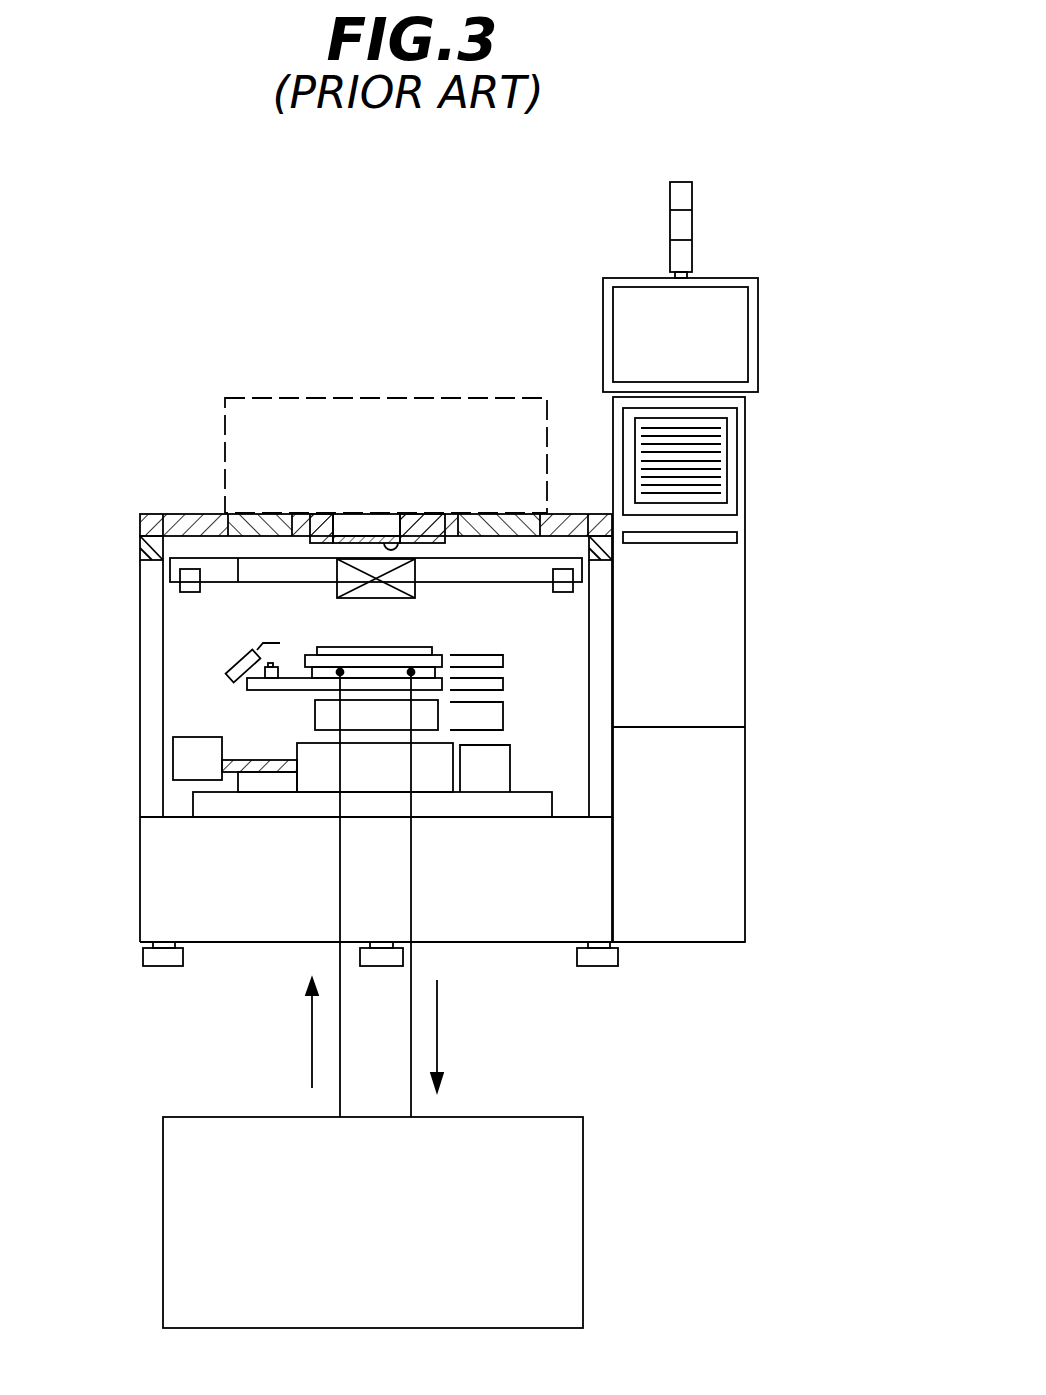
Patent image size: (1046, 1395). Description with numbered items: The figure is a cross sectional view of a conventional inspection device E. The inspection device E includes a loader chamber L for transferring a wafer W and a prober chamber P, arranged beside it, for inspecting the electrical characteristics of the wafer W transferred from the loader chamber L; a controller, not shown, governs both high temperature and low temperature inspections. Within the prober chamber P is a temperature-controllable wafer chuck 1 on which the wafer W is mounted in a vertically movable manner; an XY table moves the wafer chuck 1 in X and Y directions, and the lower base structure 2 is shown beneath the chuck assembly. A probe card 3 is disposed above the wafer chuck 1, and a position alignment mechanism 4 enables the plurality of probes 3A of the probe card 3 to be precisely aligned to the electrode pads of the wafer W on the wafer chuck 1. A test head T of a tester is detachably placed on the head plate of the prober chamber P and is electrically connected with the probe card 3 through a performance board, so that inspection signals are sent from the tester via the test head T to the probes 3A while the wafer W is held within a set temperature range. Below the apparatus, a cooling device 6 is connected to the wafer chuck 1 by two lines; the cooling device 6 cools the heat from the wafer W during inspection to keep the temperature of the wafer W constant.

The inspection device E is at (523, 265).
The test head T is at (254, 420).
The probe card 3 is at (343, 536).
The probes 3A is at (399, 540).
The wafer W is at (407, 647).
The loader chamber L is at (745, 493).
The prober chamber P is at (545, 628).
The position alignment mechanism 4 is at (281, 572).
The wafer chuck 1 is at (327, 660).
The base 2 is at (313, 770).
The cooling device 6 is at (548, 1215).